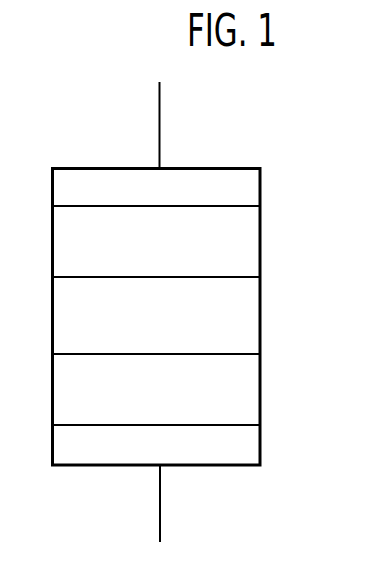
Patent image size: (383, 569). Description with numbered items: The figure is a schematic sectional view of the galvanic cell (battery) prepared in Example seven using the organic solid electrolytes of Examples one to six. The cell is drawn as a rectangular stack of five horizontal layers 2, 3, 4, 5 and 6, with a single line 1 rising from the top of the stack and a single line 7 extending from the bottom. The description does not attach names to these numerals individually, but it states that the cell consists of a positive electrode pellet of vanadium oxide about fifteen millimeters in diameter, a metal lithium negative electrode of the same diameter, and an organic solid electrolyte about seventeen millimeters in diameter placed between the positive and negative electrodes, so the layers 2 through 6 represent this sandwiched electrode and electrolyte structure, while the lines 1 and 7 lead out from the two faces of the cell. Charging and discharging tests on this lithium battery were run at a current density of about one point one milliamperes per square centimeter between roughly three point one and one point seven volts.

The upper lead wire 1 is at (160, 97).
The first layer 2 is at (256, 186).
The second layer 3 is at (256, 243).
The third layer 4 is at (256, 306).
The fourth layer 5 is at (248, 386).
The fifth layer 6 is at (248, 448).
The lower lead wire 7 is at (161, 517).